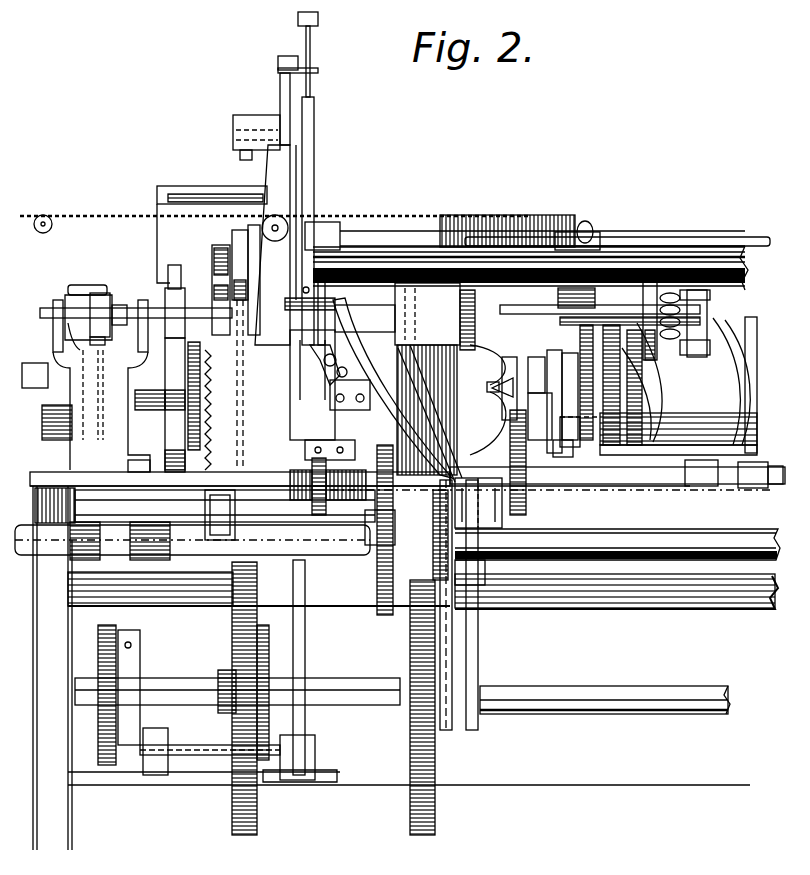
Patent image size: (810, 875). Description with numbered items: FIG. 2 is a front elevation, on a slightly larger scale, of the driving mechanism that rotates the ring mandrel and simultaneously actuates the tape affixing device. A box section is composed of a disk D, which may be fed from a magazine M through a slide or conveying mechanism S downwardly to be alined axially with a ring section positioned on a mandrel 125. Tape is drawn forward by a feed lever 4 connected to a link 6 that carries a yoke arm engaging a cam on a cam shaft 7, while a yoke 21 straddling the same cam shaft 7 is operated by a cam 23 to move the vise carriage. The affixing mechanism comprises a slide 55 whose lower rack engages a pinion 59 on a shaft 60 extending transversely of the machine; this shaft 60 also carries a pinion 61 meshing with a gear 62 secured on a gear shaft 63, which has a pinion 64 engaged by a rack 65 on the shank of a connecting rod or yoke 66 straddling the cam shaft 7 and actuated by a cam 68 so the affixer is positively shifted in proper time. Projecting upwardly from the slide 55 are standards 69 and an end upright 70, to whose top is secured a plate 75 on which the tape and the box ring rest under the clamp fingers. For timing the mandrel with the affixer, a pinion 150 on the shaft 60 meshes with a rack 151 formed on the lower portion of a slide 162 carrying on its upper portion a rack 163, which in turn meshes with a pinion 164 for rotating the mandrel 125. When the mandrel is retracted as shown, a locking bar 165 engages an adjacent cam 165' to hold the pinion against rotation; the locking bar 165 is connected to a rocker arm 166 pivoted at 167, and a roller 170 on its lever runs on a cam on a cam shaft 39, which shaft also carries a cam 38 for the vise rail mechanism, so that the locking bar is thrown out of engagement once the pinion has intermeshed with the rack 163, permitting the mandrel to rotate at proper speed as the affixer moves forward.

The slide S is at (310, 214).
The magazine M is at (392, 212).
The disk D is at (490, 216).
The locking bar 165 is at (617, 270).
The cam 165' is at (717, 279).
The pinion 164 is at (585, 310).
The rack 163 is at (502, 358).
The mandrel 125 is at (405, 310).
The rack 151 is at (505, 410).
The slide 162 is at (553, 401).
The rocker arm 166 is at (600, 400).
The roller 170 is at (553, 482).
The pivot 167 is at (590, 432).
The shaft 60 is at (643, 472).
The pinion 150 is at (523, 508).
The pinion 64 is at (462, 500).
The rack 65 is at (488, 544).
The end standard 70 is at (330, 385).
The plate 75 is at (345, 360).
The standards 69 is at (340, 368).
The cam shaft 39 is at (330, 386).
The slide 55 is at (300, 416).
The pinion 61 is at (395, 466).
The pinion 59 is at (313, 512).
The gear shaft 63 is at (275, 525).
The gear 62 is at (390, 610).
The connecting rod or yoke 66 is at (442, 623).
The yoke 21 is at (268, 630).
The feed lever 4 is at (303, 660).
The cam 23 is at (262, 828).
The cam 68 is at (412, 820).
The link 6 is at (132, 648).
The cam shaft 7 is at (165, 690).
The cam 38 is at (178, 300).